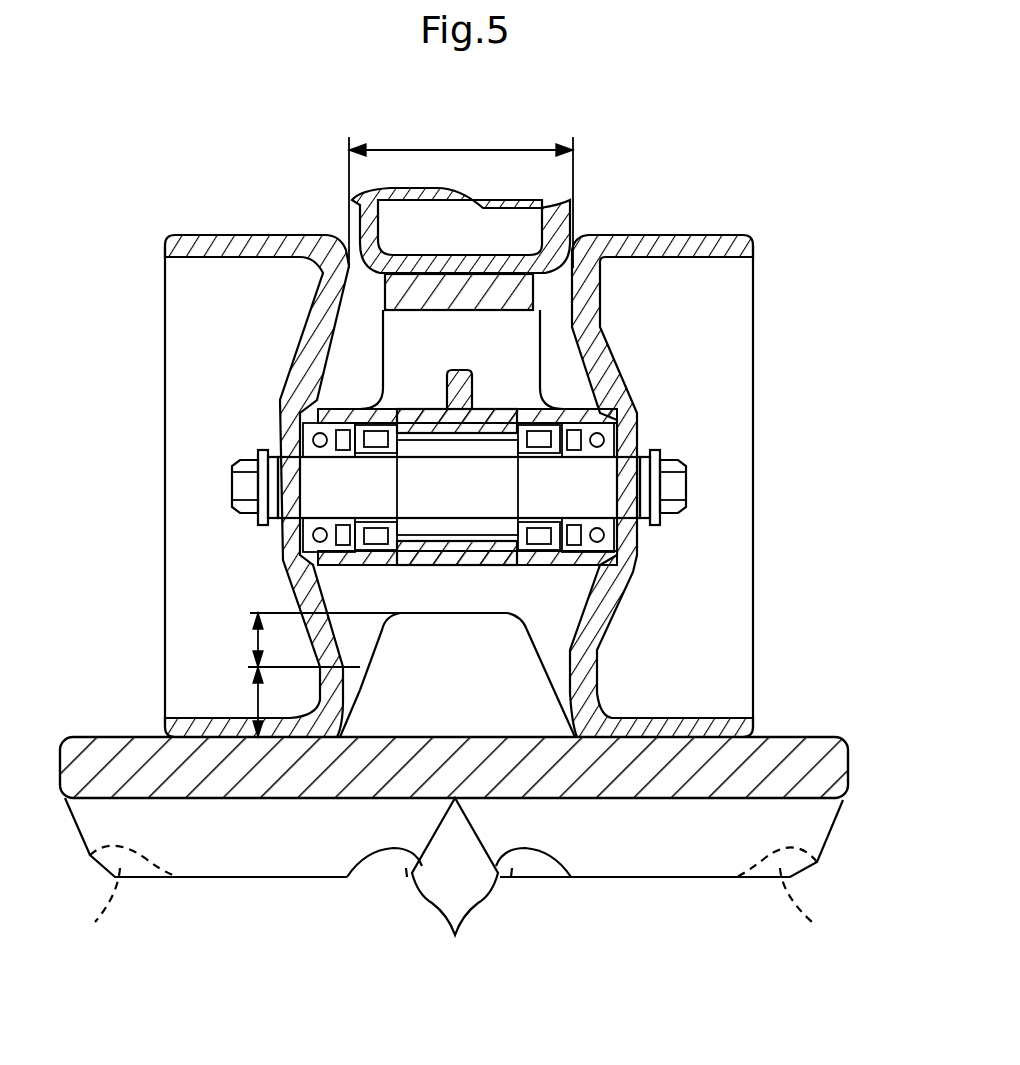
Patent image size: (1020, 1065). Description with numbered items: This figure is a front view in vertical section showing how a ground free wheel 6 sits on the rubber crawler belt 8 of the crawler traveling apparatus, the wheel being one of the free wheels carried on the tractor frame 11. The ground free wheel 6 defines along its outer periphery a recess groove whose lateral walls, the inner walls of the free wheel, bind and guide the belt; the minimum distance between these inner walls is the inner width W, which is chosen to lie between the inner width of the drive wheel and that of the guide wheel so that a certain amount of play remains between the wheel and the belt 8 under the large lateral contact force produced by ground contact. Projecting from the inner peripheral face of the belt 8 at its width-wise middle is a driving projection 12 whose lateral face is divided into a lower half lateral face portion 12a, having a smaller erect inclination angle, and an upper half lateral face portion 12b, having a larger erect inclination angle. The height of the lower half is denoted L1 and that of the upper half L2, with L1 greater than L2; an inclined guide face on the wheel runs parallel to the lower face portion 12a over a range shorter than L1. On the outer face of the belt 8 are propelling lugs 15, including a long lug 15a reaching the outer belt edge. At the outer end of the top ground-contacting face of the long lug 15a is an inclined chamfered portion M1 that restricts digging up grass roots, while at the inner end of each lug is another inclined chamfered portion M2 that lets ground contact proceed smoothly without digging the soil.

The ground free wheel 6 is at (170, 420).
The rubber crawler belt 8 is at (113, 740).
The tractor frame 11 is at (553, 218).
The driving projection 12 is at (487, 618).
The lower half lateral face portion 12a is at (300, 740).
The upper half lateral face portion 12b is at (370, 637).
The propelling lug 15 is at (447, 884).
The long lug 15a is at (260, 878).
The inclined chamfered portion M1 is at (447, 893).
The inclined chamfered portion M2 is at (455, 884).
The height of the lower half L1 is at (238, 702).
The height of the upper half L2 is at (307, 640).
The inner width W is at (461, 193).